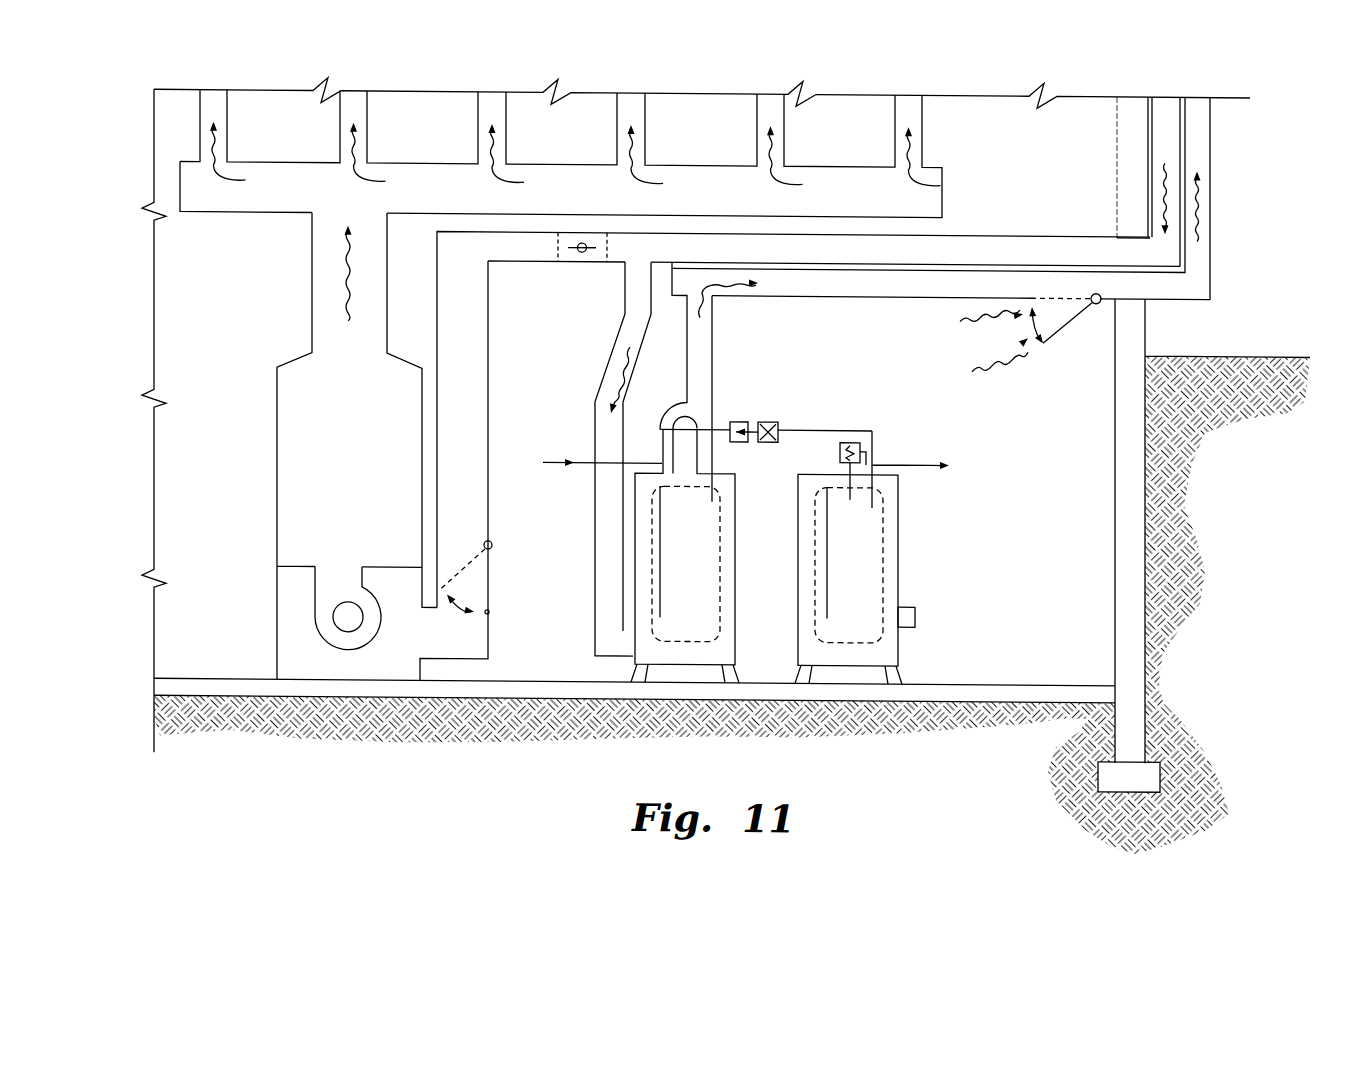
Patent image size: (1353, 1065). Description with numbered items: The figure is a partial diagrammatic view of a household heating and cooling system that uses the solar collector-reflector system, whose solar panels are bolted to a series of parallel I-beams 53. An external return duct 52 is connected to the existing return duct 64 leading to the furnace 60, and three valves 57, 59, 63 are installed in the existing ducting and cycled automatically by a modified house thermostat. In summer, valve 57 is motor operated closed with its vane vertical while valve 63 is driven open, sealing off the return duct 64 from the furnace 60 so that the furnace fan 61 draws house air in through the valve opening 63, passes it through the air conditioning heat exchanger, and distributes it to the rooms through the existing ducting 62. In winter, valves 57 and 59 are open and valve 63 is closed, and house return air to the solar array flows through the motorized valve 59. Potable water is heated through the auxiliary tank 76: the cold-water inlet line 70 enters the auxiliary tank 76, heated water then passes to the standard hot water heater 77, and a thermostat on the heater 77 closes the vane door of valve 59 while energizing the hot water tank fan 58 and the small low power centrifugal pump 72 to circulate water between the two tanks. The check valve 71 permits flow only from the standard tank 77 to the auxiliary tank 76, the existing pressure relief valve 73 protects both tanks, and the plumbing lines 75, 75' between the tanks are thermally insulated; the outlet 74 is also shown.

The external return duct 52 is at (1168, 115).
The parallel I-beams 53 is at (1211, 190).
The valve 57 is at (572, 263).
The hot water tank fan 58 is at (700, 408).
The motorized valve 59 is at (1066, 327).
The furnace 60 is at (305, 488).
The furnace fan 61 is at (315, 604).
The existing ducting 62 is at (215, 216).
The valve 63 is at (489, 583).
The existing return duct 64 is at (1000, 234).
The cold-water inlet line 70 is at (550, 465).
The check valve 71 is at (740, 419).
The centrifugal pump 72 is at (780, 420).
The pressure relief valve 73 is at (862, 450).
The hot water outlet 74 is at (931, 464).
The plumbing line 75 is at (766, 479).
The plumbing line 75' is at (900, 435).
The auxiliary tank 76 is at (737, 590).
The hot water heater 77 is at (898, 590).